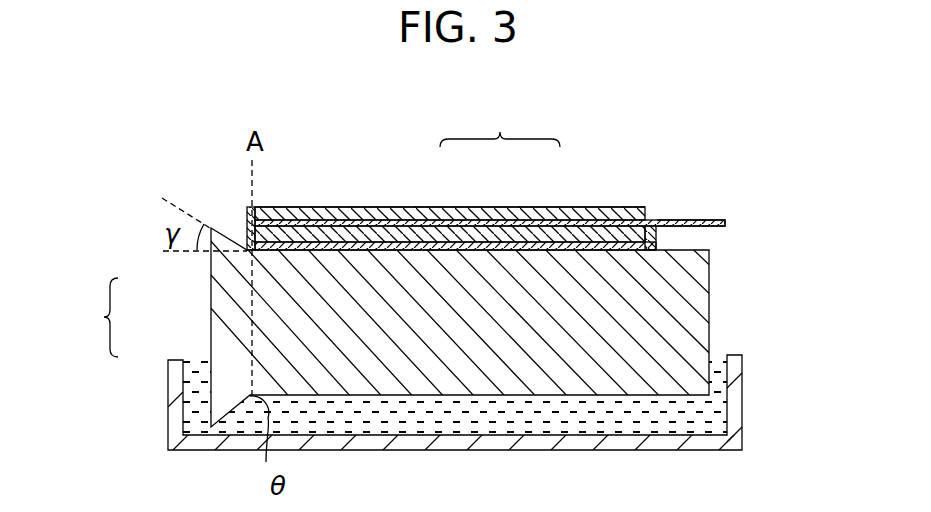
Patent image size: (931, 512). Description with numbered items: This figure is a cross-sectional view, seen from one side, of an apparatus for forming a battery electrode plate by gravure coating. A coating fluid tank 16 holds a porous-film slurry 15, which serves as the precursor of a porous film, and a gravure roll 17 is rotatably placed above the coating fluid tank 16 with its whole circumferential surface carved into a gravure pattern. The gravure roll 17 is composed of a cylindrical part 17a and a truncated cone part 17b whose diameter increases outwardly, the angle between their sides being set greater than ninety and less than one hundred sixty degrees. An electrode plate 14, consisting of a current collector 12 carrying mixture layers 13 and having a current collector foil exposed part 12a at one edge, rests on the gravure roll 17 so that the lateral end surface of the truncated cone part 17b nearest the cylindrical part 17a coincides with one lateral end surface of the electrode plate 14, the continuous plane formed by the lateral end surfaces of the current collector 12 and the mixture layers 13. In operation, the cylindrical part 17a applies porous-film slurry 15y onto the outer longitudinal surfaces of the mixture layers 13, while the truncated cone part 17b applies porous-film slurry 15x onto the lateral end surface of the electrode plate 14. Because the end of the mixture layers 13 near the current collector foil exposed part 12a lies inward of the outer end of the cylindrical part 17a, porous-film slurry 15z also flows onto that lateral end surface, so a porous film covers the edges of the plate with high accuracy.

The current collector 12 is at (537, 221).
The current collector foil exposed part 12a is at (720, 220).
The mixture layers 13 is at (460, 210).
The electrode plate 14 is at (490, 172).
The porous-film slurry 15 is at (595, 418).
The porous-film slurry 15x is at (247, 208).
The porous-film slurry 15y is at (333, 208).
The porous-film slurry 15z is at (655, 237).
The coating fluid tank 16 is at (735, 397).
The gravure roll 17 is at (473, 328).
The cylindrical part 17a is at (262, 313).
The truncated cone part 17b is at (215, 333).